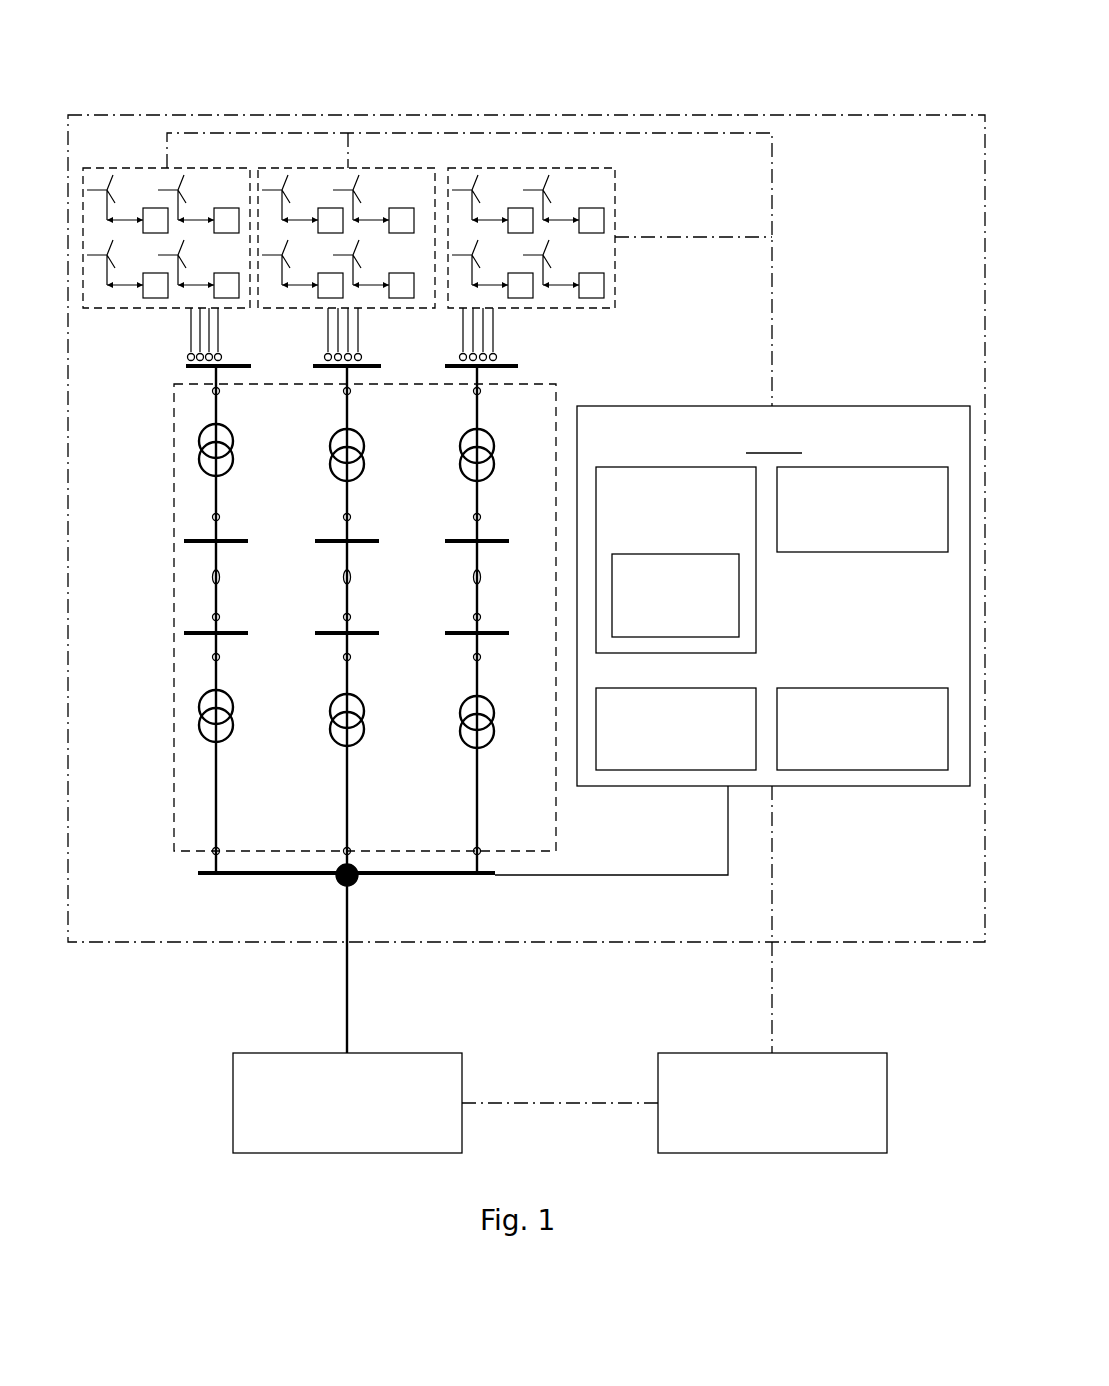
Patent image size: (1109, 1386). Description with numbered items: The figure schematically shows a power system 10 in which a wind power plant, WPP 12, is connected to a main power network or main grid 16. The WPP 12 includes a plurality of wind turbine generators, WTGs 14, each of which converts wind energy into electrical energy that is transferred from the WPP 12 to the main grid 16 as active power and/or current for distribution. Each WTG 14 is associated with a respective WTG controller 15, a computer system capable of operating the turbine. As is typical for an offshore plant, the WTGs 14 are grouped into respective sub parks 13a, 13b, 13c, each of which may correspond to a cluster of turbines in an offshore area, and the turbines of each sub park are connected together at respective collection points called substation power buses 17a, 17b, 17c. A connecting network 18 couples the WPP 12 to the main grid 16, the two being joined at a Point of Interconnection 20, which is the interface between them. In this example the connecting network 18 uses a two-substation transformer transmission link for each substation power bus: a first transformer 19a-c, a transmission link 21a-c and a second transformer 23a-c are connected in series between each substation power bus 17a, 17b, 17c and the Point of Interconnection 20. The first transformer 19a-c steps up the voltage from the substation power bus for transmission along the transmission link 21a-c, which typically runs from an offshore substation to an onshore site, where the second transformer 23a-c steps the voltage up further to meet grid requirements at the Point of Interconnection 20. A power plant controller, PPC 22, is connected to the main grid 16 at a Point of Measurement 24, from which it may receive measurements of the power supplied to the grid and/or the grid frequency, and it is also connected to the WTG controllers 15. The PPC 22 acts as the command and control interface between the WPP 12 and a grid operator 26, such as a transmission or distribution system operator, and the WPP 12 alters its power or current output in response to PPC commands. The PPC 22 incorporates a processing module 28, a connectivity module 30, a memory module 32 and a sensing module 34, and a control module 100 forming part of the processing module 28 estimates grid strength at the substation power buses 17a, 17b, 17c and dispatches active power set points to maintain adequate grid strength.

The power system 10 is at (160, 86).
The WPP 12 is at (705, 115).
The sub park 13a is at (207, 168).
The sub park 13b is at (377, 167).
The sub park 13c is at (532, 168).
The WTGs 14 is at (280, 176).
The WTG controller 15 is at (408, 185).
The main grid 16 is at (233, 1103).
The substation power bus 17a is at (186, 368).
The substation power bus 17b is at (313, 365).
The substation power bus 17c is at (518, 366).
The connecting network 18 is at (540, 851).
The first transformer 19a-c is at (475, 470).
The Point of Interconnection 20 is at (437, 878).
The transmission link 21a-c is at (476, 574).
The power plant controller 22 is at (835, 432).
The second transformer 23a-c is at (475, 735).
The Point of Measurement 24 is at (338, 880).
The grid operator 26 is at (887, 1103).
The processing module 28 is at (675, 466).
The connectivity module 30 is at (862, 467).
The memory module 32 is at (675, 770).
The sensing module 34 is at (865, 770).
The control module 100 is at (739, 592).